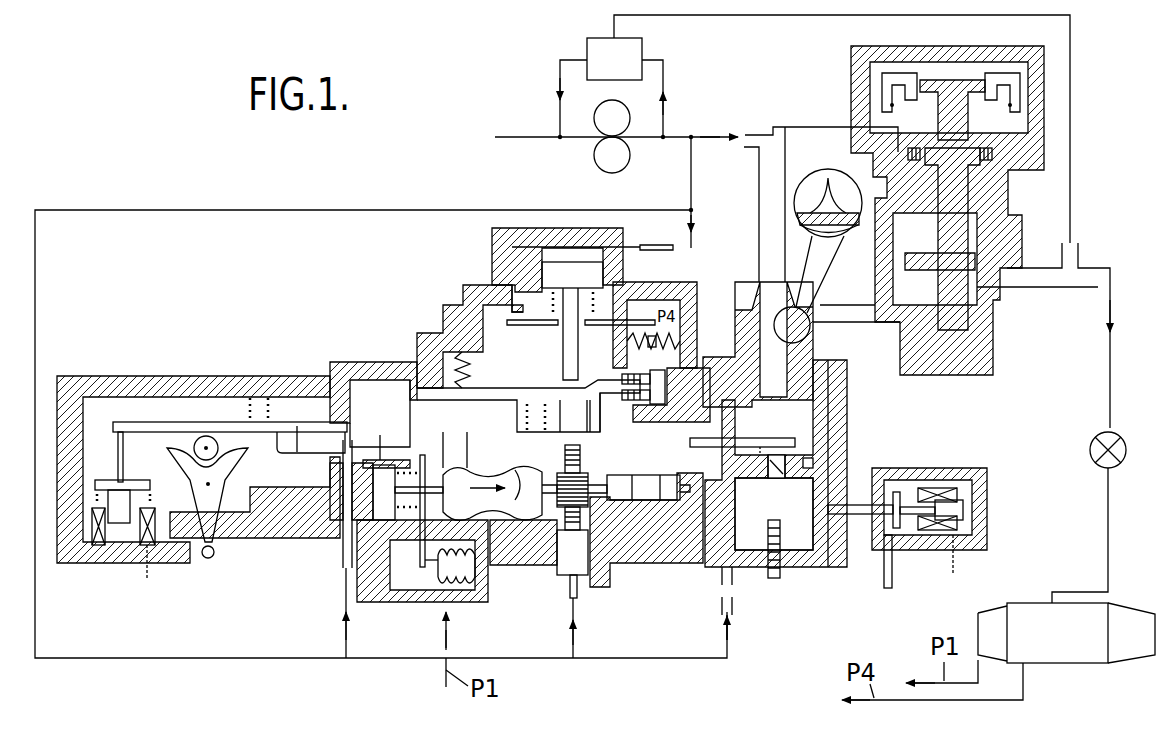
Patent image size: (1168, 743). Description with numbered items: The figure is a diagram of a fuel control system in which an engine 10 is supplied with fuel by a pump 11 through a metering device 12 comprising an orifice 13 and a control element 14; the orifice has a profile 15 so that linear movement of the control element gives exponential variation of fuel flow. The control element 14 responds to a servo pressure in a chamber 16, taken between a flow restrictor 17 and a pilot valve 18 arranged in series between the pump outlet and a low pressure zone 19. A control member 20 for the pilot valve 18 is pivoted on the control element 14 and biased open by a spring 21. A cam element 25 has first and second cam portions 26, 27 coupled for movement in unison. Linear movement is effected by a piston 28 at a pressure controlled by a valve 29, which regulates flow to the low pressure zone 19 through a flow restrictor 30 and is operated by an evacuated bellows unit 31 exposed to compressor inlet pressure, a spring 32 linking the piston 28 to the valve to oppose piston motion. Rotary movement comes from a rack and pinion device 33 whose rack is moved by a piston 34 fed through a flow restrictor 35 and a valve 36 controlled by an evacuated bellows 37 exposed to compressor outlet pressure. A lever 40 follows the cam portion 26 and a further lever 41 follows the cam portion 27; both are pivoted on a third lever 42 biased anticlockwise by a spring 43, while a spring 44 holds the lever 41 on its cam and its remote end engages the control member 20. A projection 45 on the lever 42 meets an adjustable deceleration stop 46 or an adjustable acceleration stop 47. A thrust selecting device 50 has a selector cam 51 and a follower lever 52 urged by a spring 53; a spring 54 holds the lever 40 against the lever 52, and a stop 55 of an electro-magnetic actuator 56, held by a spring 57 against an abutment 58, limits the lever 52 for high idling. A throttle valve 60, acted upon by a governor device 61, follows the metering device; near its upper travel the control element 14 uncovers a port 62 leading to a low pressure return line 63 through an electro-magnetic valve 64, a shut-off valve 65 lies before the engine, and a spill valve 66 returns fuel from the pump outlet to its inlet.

The engine 10 is at (1062, 650).
The pump 11 is at (605, 160).
The metering device 12 is at (853, 397).
The orifice 13 is at (752, 300).
The control element 14 is at (812, 332).
The orifice profile 15 is at (817, 192).
The chamber 16 is at (805, 540).
The flow restrictor 17 is at (733, 590).
The pilot valve 18 is at (773, 462).
The low pressure zone 19 is at (497, 322).
The control member 20 is at (760, 447).
The spring 21 is at (815, 458).
The cam element 25 is at (526, 527).
The first cam portion 26 is at (468, 505).
The second cam portion 27 is at (522, 478).
The piston 28 is at (382, 490).
The valve 29 is at (400, 460).
The flow restrictor 30 is at (343, 540).
The evacuated bellows unit 31 is at (458, 567).
The spring 32 is at (411, 508).
The rack and pinion device 33 is at (593, 513).
The piston 34 is at (575, 273).
The flow restrictor 35 is at (633, 248).
The valve 36 is at (518, 312).
The evacuated bellows 37 is at (687, 315).
The lever 40 is at (357, 447).
The further lever 41 is at (563, 448).
The third lever 42 is at (492, 398).
The spring 43 is at (457, 362).
The spring 44 is at (545, 405).
The projection 45 is at (608, 382).
The adjustable deceleration stop 46 is at (662, 372).
The adjustable acceleration stop 47 is at (633, 398).
The device 50 is at (248, 362).
The selector cam 51 is at (227, 467).
The follower lever 52 is at (160, 420).
The spring 53 is at (270, 400).
The spring 54 is at (300, 440).
The stop 55 is at (137, 482).
The electro-magnetic actuator 56 is at (118, 518).
The spring 57 is at (150, 497).
The abutment 58 is at (116, 480).
The throttle valve 60 is at (1082, 140).
The governor device 61 is at (880, 78).
The port 62 is at (838, 515).
The low pressure return line 63 is at (893, 570).
The electro-magnetic valve 64 is at (956, 462).
The shut-off valve 65 is at (1102, 462).
The spill valve 66 is at (628, 52).